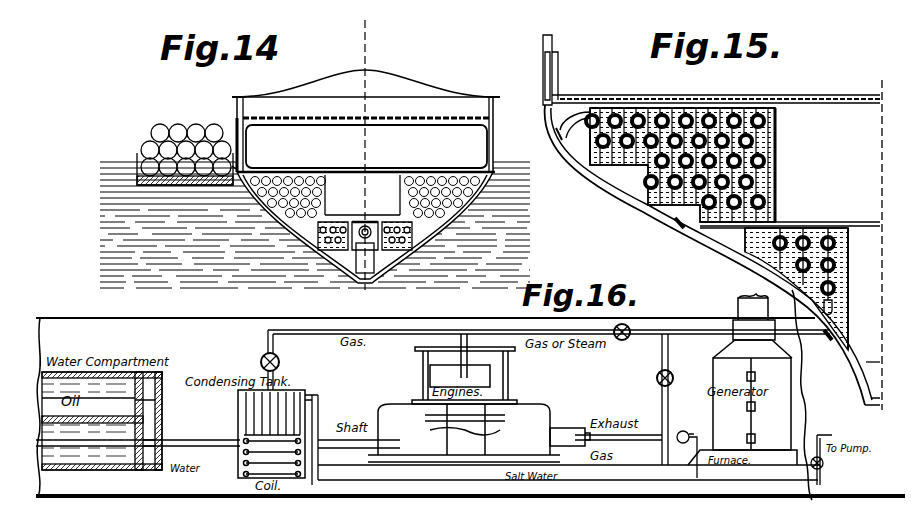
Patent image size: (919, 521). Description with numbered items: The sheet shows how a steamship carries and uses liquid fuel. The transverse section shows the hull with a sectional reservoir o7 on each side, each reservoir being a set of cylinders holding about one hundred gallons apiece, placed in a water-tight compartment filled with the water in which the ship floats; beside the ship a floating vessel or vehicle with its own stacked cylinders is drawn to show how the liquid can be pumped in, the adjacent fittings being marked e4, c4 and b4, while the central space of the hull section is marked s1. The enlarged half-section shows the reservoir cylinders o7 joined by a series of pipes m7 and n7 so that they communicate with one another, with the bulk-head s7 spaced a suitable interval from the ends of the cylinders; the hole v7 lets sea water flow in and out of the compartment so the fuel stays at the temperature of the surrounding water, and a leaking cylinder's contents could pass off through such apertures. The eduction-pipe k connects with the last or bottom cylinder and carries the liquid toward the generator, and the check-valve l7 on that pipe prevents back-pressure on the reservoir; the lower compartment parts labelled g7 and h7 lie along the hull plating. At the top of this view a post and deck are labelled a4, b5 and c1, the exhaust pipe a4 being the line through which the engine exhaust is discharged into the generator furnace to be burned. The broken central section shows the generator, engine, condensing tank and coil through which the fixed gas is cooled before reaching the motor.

In FIG. 14, the cylinder rack e4 is at (229, 158).
In FIG. 14, the hull edge c4 is at (200, 186).
In FIG. 14, the side wall b4 is at (242, 145).
In FIG. 15, the side wall b4 is at (545, 68).
In FIG. 14, the central compartment s1 is at (362, 195).
In FIG. 14, the pipe m7 is at (365, 242).
In FIG. 15, the pipe m7 is at (770, 274).
In FIG. 15, the exhaust pipe a4 is at (560, 76).
In FIG. 15, the deck b5 is at (716, 92).
In FIG. 15, the hull plating g7 is at (808, 300).
In FIG. 15, the bulk-head s7 is at (735, 167).
In FIG. 15, the sectional reservoir o7 is at (838, 252).
In FIG. 15, the hole v7 is at (557, 134).
In FIG. 15, the pipe n7 is at (684, 224).
In FIG. 15, the eduction-pipe k is at (848, 302).
In FIG. 15, the partition h7 is at (722, 234).
In FIG. 15, the check-valve l7 is at (850, 284).
In FIG. 15, the tank top c1 is at (682, 106).